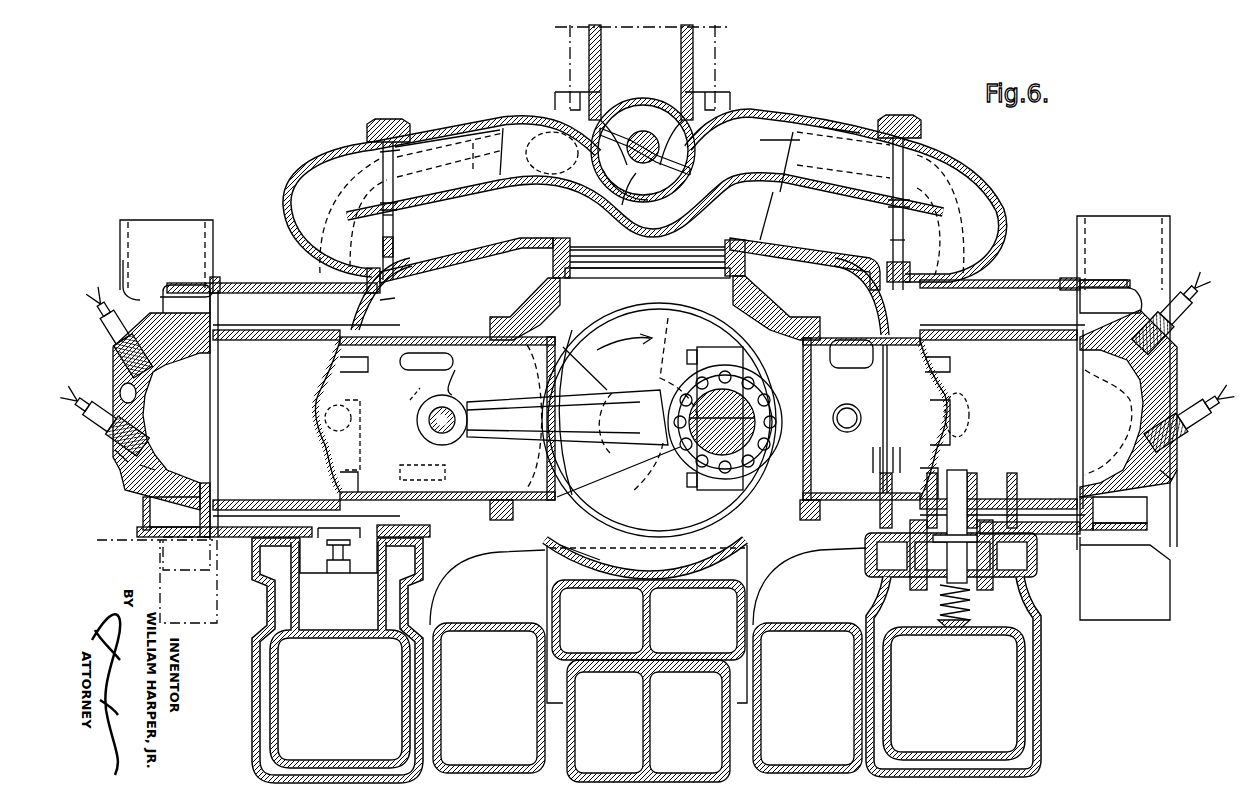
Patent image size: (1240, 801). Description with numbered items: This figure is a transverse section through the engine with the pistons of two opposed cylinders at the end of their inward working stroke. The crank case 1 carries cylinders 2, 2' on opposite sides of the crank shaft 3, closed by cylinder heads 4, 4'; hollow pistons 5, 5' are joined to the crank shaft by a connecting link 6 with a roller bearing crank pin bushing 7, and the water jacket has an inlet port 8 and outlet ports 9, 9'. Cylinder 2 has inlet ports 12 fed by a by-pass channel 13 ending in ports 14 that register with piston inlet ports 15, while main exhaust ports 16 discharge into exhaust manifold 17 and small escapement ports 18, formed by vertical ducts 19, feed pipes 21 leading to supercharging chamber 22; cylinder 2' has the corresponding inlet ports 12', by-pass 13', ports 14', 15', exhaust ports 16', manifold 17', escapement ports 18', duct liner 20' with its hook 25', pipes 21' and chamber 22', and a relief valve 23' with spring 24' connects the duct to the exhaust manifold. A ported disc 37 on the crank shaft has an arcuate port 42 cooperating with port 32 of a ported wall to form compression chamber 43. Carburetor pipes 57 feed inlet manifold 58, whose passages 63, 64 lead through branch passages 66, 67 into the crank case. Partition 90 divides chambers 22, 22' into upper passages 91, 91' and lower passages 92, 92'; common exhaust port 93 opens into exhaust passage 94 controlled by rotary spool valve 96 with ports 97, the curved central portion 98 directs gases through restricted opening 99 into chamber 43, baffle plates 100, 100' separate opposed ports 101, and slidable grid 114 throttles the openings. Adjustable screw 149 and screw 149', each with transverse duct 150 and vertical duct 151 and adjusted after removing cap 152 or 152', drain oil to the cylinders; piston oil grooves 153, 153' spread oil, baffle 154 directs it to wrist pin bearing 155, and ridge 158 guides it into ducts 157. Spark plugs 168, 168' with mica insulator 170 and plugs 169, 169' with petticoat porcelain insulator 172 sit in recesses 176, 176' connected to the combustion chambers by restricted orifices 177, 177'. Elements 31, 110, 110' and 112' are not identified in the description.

The crank case 1 is at (530, 550).
The cylinder 2 is at (305, 413).
The cylinder 2' is at (1002, 420).
The crank shaft 3 is at (748, 424).
The cylinder head 4 is at (150, 393).
The cylinder head 4' is at (1129, 412).
The piston 5 is at (447, 434).
The piston 5' is at (861, 434).
The connecting link 6 is at (500, 418).
The roller bearing crank pin bushing 7 is at (690, 446).
The water inlet port 8 is at (203, 605).
The water outlet port 9 is at (147, 258).
The water outlet port 9' is at (1124, 237).
The inlet ports 12 is at (324, 360).
The inlet ports 12' is at (956, 362).
The by-pass channel 13 is at (410, 294).
The by-pass channel 13' is at (858, 296).
The ports 14 is at (492, 407).
The ports 14' is at (780, 398).
The inlet ports 15 is at (451, 368).
The inlet ports 15' is at (851, 367).
The main exhaust ports 16 is at (321, 482).
The main exhaust ports 16' is at (955, 472).
The main exhaust manifold 17 is at (317, 653).
The main exhaust manifold 17' is at (976, 675).
The escapement ports 18 is at (309, 417).
The escapement ports 18' is at (978, 403).
The vertical ducts 19 is at (340, 455).
The tubular metal liner 20' is at (955, 488).
The pipes 21 is at (400, 203).
The pipes 21' is at (894, 195).
The supercharging chamber 22 is at (429, 196).
The supercharging chamber 22' is at (866, 195).
The pressure relief valve 23' is at (951, 555).
The spring 24' is at (974, 609).
The hook 25' is at (967, 526).
The crankcase bore 31 is at (659, 420).
The port 32 is at (680, 330).
The ported disc 37 is at (600, 327).
The arcuate port 42 is at (590, 378).
The compression chamber 43 is at (737, 320).
The outlet pipes 57 is at (467, 747).
The inlet manifold 58 is at (575, 760).
The divided passage 63 is at (609, 722).
The divided passage 64 is at (686, 722).
The passage 66 is at (601, 620).
The passage 67 is at (693, 620).
The partition 90 is at (447, 205).
The upper passage 91 is at (447, 120).
The upper passage 91' is at (846, 114).
The lower passage 92 is at (645, 164).
The lower passage 92' is at (824, 186).
The exhaust port 93 is at (622, 195).
The exhaust passage 94 is at (688, 58).
The rotary spool valve 96 is at (640, 100).
The ports 97 is at (682, 144).
The central portion of partition 98 is at (632, 258).
The restricted opening 99 is at (595, 252).
The vertical baffle plate 100 is at (523, 129).
The vertical baffle plate 100' is at (788, 112).
The ports 101 is at (555, 160).
The piston skirt 110 is at (308, 416).
The piston skirt 110' is at (984, 419).
The piston boss 112' is at (981, 422).
The slidable grid 114 is at (680, 256).
The adjustable screw 149 is at (411, 215).
The adjustable screw 149' is at (873, 227).
The transverse oil duct 150 is at (407, 258).
The vertical oil duct 151 is at (390, 310).
The cap 152 is at (390, 179).
The cap 152' is at (915, 190).
The oil grooves 153 is at (427, 436).
The oil grooves 153' is at (866, 460).
The baffle 154 is at (462, 387).
The wrist pin bearing 155 is at (420, 432).
The duct 157 is at (588, 548).
The ridge 158 is at (560, 467).
The spark plug 168 is at (118, 325).
The spark plug 168' is at (1175, 307).
The spark plug 169 is at (103, 421).
The spark plug 169' is at (1192, 416).
The mica insulator 170 is at (140, 358).
The petticoat porcelain insulator 172 is at (120, 455).
The recess 176 is at (171, 446).
The recess 176' is at (1198, 479).
The restricted orifice 177 is at (283, 494).
The restricted orifice 177' is at (1063, 502).